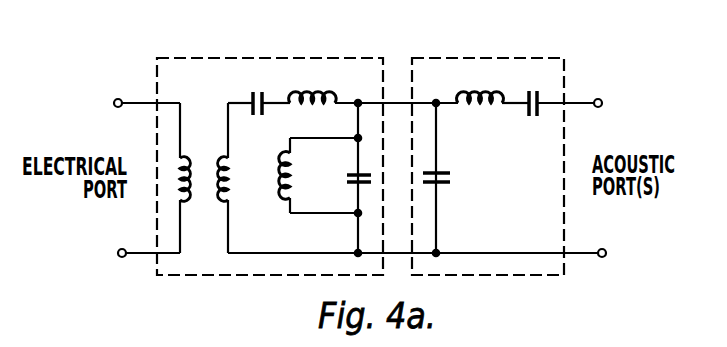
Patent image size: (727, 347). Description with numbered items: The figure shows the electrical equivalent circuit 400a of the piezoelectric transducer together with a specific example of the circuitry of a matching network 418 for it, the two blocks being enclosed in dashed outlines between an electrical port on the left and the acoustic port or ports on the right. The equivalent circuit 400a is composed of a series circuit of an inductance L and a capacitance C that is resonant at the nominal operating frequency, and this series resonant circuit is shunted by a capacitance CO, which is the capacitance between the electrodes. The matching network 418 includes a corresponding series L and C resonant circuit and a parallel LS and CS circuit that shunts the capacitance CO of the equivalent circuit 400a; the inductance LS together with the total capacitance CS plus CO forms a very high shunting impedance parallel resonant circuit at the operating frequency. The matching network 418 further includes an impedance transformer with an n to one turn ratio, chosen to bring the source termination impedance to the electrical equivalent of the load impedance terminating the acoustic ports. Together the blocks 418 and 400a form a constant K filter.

The matching network 418 is at (281, 68).
The electrical equivalent circuit 400a is at (480, 68).
The capacitance C is at (258, 117).
The inductance L is at (313, 112).
The inductance Ls LS is at (273, 176).
The capacitance Cs CS is at (349, 181).
The capacitance Co CO is at (449, 180).